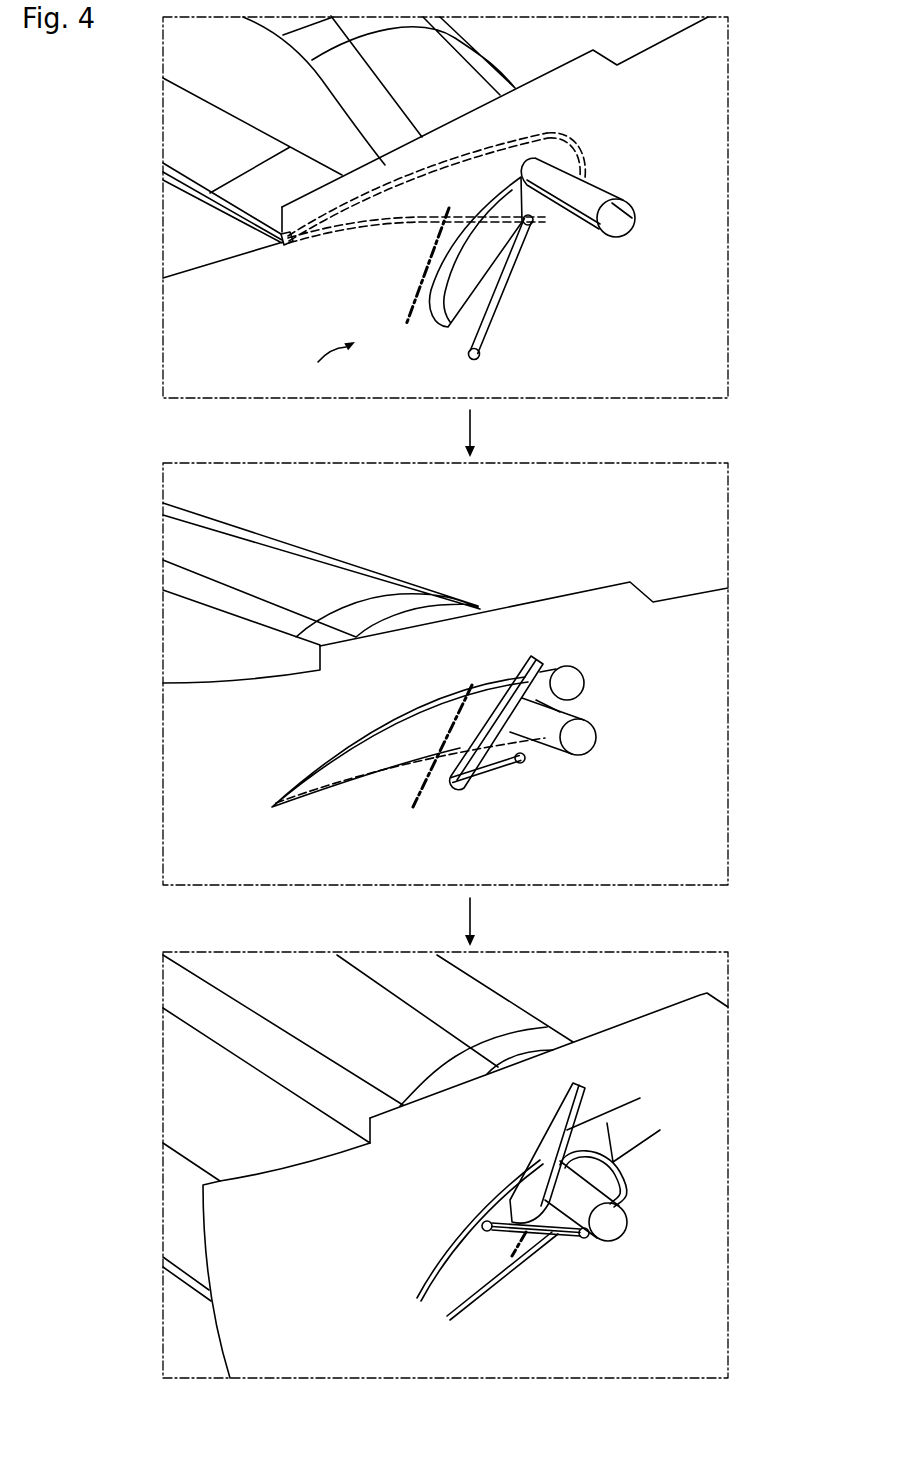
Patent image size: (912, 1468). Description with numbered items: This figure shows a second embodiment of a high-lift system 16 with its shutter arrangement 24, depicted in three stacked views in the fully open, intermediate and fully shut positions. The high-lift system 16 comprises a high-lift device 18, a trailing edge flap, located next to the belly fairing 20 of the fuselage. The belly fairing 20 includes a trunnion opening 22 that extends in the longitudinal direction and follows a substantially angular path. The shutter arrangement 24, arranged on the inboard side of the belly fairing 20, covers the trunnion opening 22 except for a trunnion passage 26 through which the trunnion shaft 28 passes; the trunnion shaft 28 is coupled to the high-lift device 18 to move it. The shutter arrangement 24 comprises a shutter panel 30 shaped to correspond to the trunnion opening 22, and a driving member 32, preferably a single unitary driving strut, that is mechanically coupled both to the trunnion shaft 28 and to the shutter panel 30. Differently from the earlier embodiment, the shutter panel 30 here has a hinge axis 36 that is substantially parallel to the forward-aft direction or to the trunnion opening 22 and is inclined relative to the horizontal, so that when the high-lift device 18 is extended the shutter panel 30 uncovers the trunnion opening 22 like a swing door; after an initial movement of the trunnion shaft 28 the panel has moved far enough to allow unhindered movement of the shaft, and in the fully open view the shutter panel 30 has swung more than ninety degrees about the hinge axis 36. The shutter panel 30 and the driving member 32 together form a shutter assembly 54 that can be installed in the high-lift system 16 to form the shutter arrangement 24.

The high-lift system 16 is at (150, 130).
The high-lift device 18 is at (463, 73).
The belly fairing 20 is at (690, 93).
The trunnion opening 22 is at (570, 688).
The shutter arrangement 24 is at (300, 300).
The trunnion passage 26 is at (570, 144).
The trunnion shaft 28 is at (620, 225).
The shutter panel 30 is at (455, 318).
The driving member 32 is at (498, 300).
The hinge axis 36 is at (432, 262).
The shutter assembly 54 is at (321, 358).